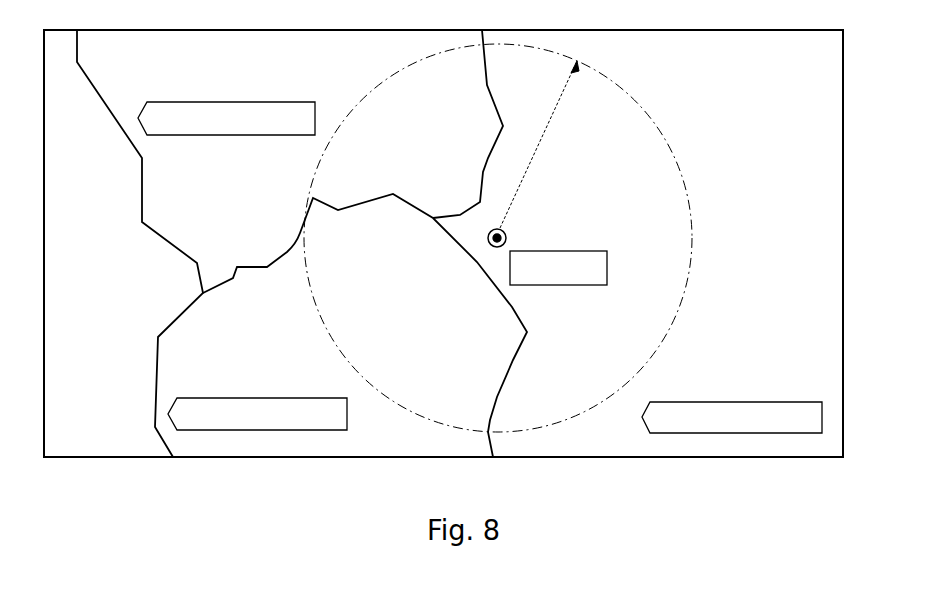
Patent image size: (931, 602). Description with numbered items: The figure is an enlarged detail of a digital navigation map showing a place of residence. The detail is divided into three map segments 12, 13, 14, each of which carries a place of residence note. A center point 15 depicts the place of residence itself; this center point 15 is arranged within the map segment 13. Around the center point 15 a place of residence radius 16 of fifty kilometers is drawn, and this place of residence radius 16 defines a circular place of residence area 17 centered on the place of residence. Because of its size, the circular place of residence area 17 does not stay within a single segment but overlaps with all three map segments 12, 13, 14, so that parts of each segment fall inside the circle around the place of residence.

The map segment 12 is at (236, 66).
The map segment 13 is at (744, 366).
The map segment 14 is at (270, 364).
The center point 15 is at (490, 246).
The place of residence radius 16 is at (530, 160).
The circular place of residence area 17 is at (533, 238).